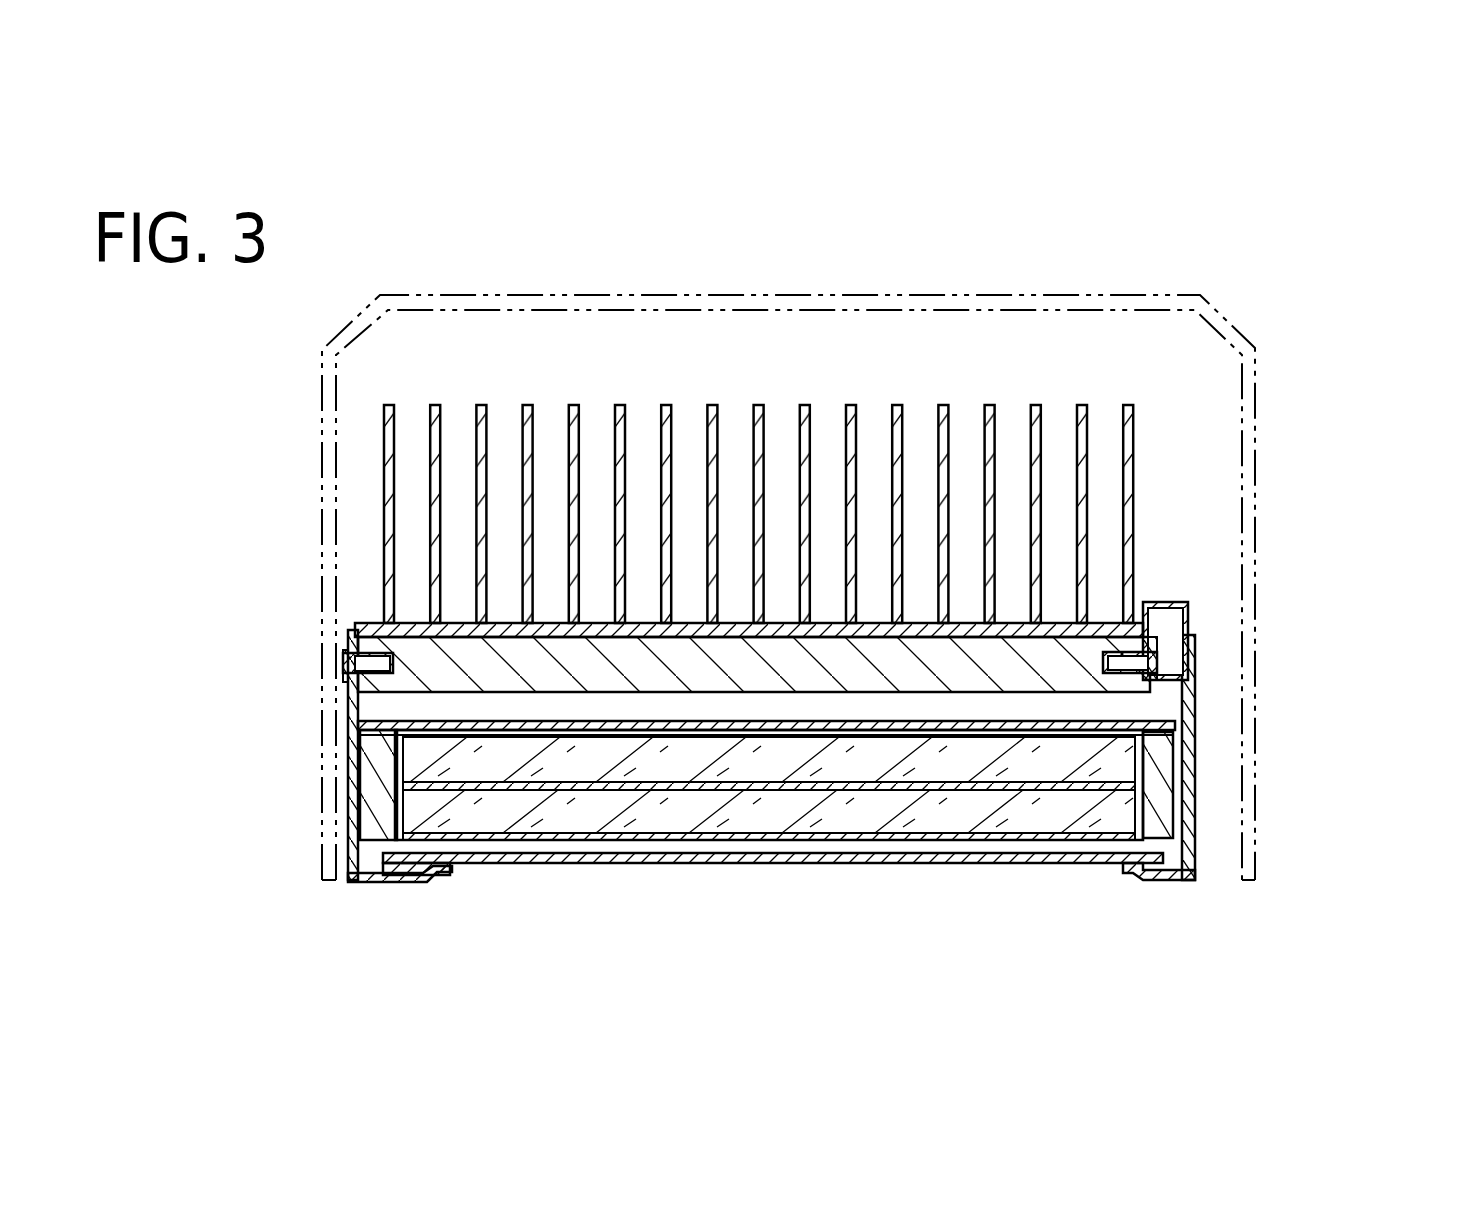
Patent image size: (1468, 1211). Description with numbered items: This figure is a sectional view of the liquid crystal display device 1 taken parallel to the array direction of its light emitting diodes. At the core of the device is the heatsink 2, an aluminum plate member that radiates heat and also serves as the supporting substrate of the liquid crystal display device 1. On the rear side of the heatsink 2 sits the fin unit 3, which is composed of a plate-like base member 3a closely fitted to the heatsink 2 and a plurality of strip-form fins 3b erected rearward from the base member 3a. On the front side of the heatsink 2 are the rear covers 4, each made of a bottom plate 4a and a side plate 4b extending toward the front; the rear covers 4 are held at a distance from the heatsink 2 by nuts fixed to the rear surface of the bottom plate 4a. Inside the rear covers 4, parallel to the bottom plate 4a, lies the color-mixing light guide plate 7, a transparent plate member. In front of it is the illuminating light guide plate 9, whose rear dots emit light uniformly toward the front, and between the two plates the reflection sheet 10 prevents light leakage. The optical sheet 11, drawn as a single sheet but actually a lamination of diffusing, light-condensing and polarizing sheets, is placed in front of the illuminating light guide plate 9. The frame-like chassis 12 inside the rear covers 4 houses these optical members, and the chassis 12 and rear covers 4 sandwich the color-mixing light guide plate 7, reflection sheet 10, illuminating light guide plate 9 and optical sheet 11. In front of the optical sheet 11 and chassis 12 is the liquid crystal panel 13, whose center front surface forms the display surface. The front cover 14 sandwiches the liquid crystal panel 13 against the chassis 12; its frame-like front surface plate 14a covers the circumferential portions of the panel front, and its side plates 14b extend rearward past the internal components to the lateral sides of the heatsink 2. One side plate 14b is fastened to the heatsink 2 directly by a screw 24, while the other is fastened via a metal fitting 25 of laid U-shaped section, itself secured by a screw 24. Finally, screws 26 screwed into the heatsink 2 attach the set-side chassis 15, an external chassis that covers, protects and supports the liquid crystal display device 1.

The liquid crystal display device 1 is at (1303, 300).
The heatsink 2 is at (530, 672).
The fin unit 3 is at (231, 486).
The base member 3a is at (372, 624).
The fins 3b is at (384, 511).
The rear cover 4 is at (231, 688).
The bottom plate 4a is at (383, 721).
The side plate 4b is at (382, 737).
The color-mixing light guide plate 7 is at (586, 762).
The illuminating light guide plate 9 is at (716, 800).
The reflection sheet 10 is at (645, 790).
The optical sheet 11 is at (772, 838).
The chassis 12 is at (376, 779).
The liquid crystal panel 13 is at (852, 862).
The front cover 14 is at (231, 908).
The front surface plate 14a is at (374, 882).
The side plates 14b is at (351, 859).
The set-side chassis 15 is at (1258, 433).
The screw 24 is at (350, 654).
The metal fitting 25 is at (1160, 600).
The screws 26 is at (314, 680).